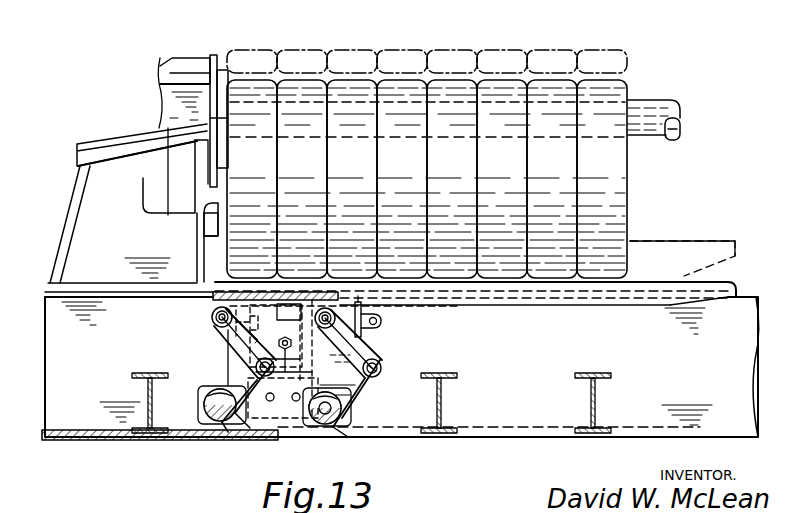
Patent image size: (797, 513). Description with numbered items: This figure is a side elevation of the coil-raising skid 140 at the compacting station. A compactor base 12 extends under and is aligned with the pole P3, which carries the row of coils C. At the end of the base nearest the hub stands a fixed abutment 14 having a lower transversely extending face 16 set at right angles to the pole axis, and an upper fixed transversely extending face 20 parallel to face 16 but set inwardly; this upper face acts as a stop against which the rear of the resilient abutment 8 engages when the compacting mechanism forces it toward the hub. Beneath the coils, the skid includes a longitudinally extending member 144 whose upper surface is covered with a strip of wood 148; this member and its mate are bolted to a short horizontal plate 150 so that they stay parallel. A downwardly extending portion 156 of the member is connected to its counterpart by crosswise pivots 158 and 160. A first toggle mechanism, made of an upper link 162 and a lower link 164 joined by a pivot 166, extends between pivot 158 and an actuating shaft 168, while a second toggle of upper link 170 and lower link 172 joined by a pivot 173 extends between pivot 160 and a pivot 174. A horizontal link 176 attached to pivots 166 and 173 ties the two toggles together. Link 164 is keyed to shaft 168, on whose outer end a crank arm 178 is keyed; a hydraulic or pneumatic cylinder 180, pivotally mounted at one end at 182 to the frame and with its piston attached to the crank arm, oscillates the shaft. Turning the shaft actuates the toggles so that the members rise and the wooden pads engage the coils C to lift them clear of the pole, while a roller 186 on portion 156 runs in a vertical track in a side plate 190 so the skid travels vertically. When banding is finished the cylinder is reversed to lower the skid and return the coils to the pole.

The resilient abutment 8 is at (213, 55).
The coils C is at (622, 62).
The pole P3 is at (661, 112).
The compactor base 12 is at (752, 339).
The fixed abutment 14 is at (80, 243).
The lower transversely extending face 16 is at (208, 205).
The upper fixed transversely extending face 20 is at (190, 180).
The skid 140 is at (536, 318).
The longitudinally extending member 144 is at (672, 302).
The strip of wood 148 is at (724, 281).
The short horizontal plate 150 is at (212, 297).
The downwardly extending portion 156 is at (352, 390).
The crosswise pivot 158 is at (210, 320).
The crosswise pivot 160 is at (338, 328).
The upper link 162 is at (236, 360).
The lower link 164 is at (232, 430).
The pivot 166 is at (256, 369).
The actuating shaft 168 is at (212, 418).
The upper link 170 is at (382, 352).
The lower link 172 is at (386, 393).
The pivot 173 is at (376, 370).
The pivot 174 is at (340, 424).
The horizontal link 176 is at (336, 412).
The crank arm 178 is at (220, 351).
The hydraulic or pneumatic cylinder 180 is at (384, 328).
The pivotal mounting 182 is at (382, 321).
The roller 186 is at (287, 380).
The side plate 190 is at (300, 420).